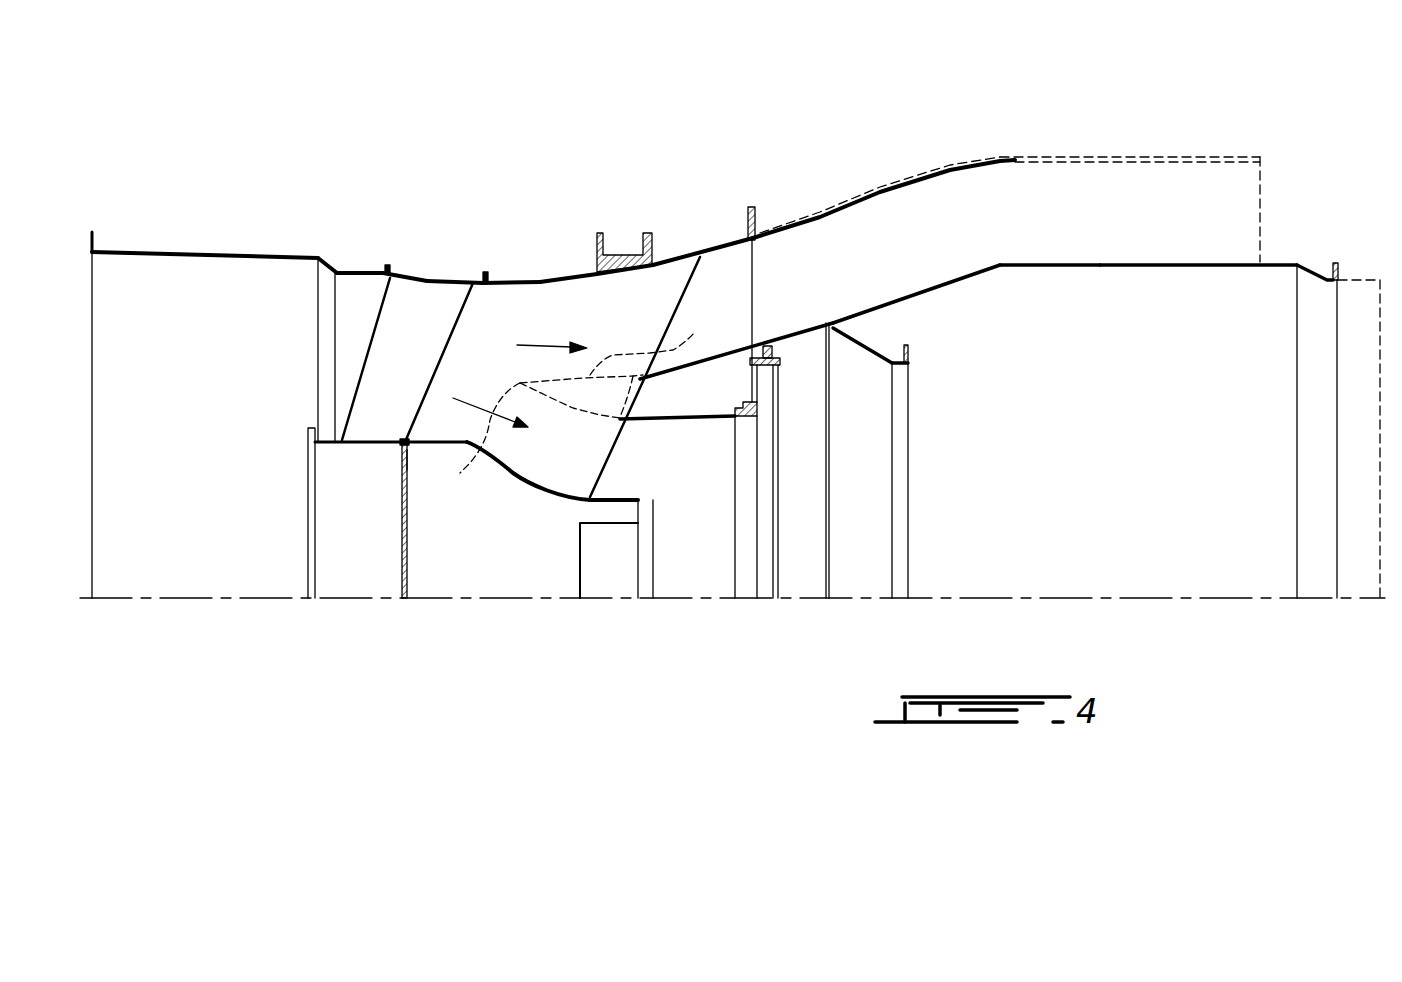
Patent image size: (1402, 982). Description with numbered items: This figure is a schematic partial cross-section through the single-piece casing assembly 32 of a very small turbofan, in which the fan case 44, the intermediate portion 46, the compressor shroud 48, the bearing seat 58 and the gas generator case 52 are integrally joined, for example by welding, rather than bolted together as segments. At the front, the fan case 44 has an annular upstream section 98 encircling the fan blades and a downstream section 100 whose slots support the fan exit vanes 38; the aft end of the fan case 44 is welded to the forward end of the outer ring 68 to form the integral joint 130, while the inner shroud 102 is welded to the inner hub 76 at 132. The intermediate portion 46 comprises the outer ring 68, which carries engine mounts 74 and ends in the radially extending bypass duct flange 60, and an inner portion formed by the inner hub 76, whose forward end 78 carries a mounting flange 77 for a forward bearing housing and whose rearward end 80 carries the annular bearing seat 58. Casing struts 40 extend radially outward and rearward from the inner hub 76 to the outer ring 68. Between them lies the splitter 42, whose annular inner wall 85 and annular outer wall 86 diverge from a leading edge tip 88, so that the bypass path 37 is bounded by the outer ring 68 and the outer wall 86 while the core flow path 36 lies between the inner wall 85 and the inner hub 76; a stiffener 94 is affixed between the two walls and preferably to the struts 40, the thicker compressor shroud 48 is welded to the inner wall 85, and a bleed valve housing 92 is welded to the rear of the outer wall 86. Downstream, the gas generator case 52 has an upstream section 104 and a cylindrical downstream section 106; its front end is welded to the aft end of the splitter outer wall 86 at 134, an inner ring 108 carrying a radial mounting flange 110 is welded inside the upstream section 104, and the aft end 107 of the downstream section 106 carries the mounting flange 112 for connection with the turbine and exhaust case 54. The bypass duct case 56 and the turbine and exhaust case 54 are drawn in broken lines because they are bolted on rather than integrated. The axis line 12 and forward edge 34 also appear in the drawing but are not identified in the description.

The engine centerline axis 12 is at (197, 598).
The casing assembly 32 is at (526, 195).
The forward casing end 34 is at (92, 232).
The core flow path 36 is at (455, 398).
The annular bypass path 37 is at (517, 345).
The fan exit vanes 38 is at (418, 355).
The casing struts 40 is at (628, 315).
The splitter 42 is at (695, 332).
The fan case 44 is at (322, 258).
The intermediate portion 46 is at (718, 248).
The compressor shroud 48 is at (693, 420).
The gas generator case 52 is at (1152, 263).
The turbine and exhaust case 54 is at (1357, 280).
The bypass duct case 56 is at (1140, 160).
The bearing seat 58 is at (633, 527).
The bypass duct flange 60 is at (750, 210).
The outer ring 68 is at (560, 272).
The engine mounts 74 is at (653, 257).
The inner hub 76 is at (523, 480).
The mounting flange 77 is at (410, 463).
The forward end of inner hub 78 is at (400, 462).
The rearward end of inner hub 80 is at (653, 498).
The annular inner wall 85 is at (573, 408).
The annular outer wall 86 is at (725, 353).
The leading edge tip 88 is at (480, 443).
The bleed valve housing 92 is at (780, 362).
The stiffener 94 is at (643, 398).
The upstream section 98 is at (205, 252).
The downstream section 100 is at (357, 265).
The inner shroud 102 is at (357, 445).
The upstream section 104 is at (925, 283).
The downstream section 106 is at (1075, 260).
The aft end 107 is at (1323, 277).
The inner ring 108 is at (863, 343).
The mounting flange 110 is at (910, 352).
The mounting flange 112 is at (1333, 268).
The integral joint 130 is at (507, 282).
The weld 132 is at (393, 444).
The weld joint 134 is at (828, 317).